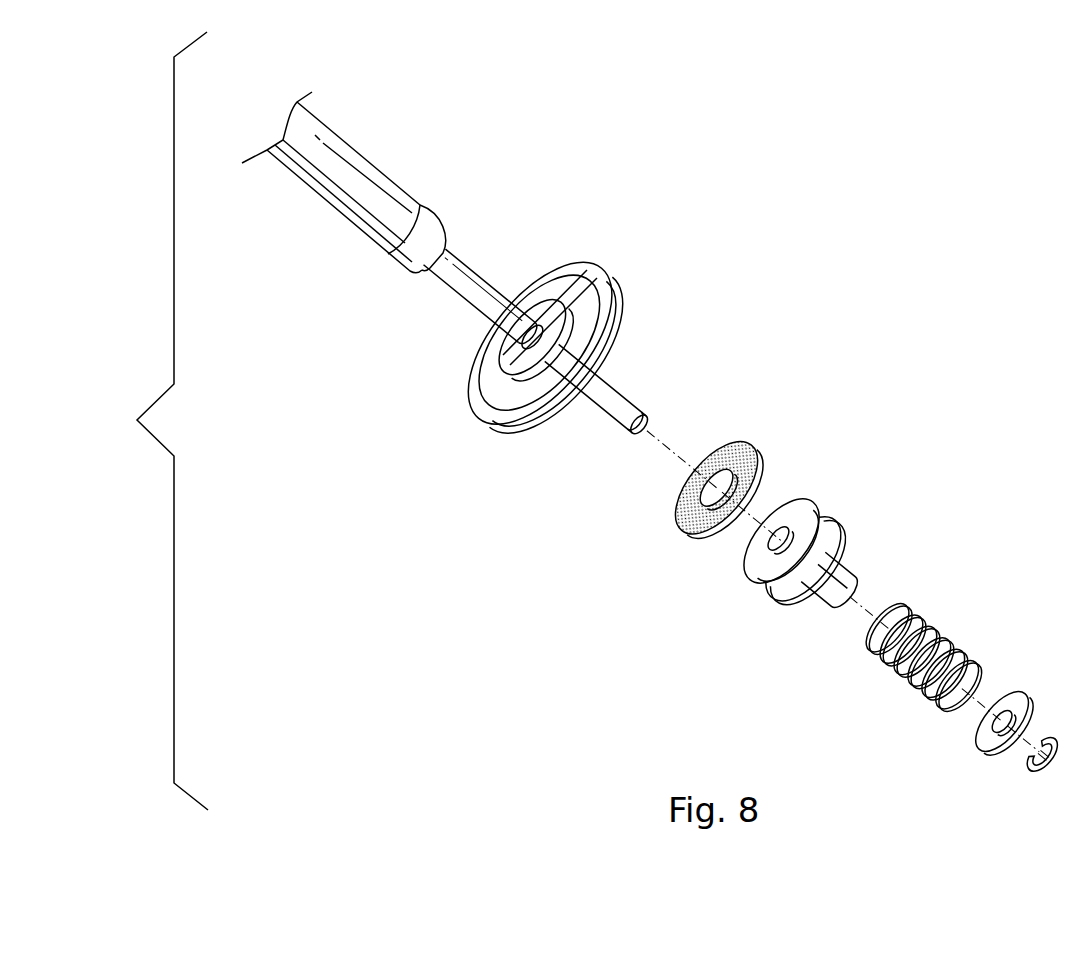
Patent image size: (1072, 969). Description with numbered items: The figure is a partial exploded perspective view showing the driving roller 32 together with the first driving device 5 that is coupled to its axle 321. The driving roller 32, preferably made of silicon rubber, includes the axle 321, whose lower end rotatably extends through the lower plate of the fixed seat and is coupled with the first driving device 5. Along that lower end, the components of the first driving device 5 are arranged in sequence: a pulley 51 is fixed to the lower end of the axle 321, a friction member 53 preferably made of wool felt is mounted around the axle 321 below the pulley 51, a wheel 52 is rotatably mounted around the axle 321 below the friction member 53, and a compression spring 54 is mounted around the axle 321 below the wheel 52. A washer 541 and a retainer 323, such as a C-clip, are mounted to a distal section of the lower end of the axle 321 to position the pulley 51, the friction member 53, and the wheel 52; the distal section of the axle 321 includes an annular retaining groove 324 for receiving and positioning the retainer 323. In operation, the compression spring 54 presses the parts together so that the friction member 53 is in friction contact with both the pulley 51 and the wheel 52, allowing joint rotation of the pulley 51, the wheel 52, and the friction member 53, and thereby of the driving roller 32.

The driving roller 32 is at (343, 210).
The axle 321 is at (458, 292).
The annular retaining groove 324 is at (648, 420).
The pulley 51 is at (480, 397).
The friction member 53 is at (682, 530).
The wheel 52 is at (755, 572).
The compression spring 54 is at (888, 673).
The washer 541 is at (982, 738).
The retainer 323 is at (1033, 765).
The first driving device 5 is at (852, 468).